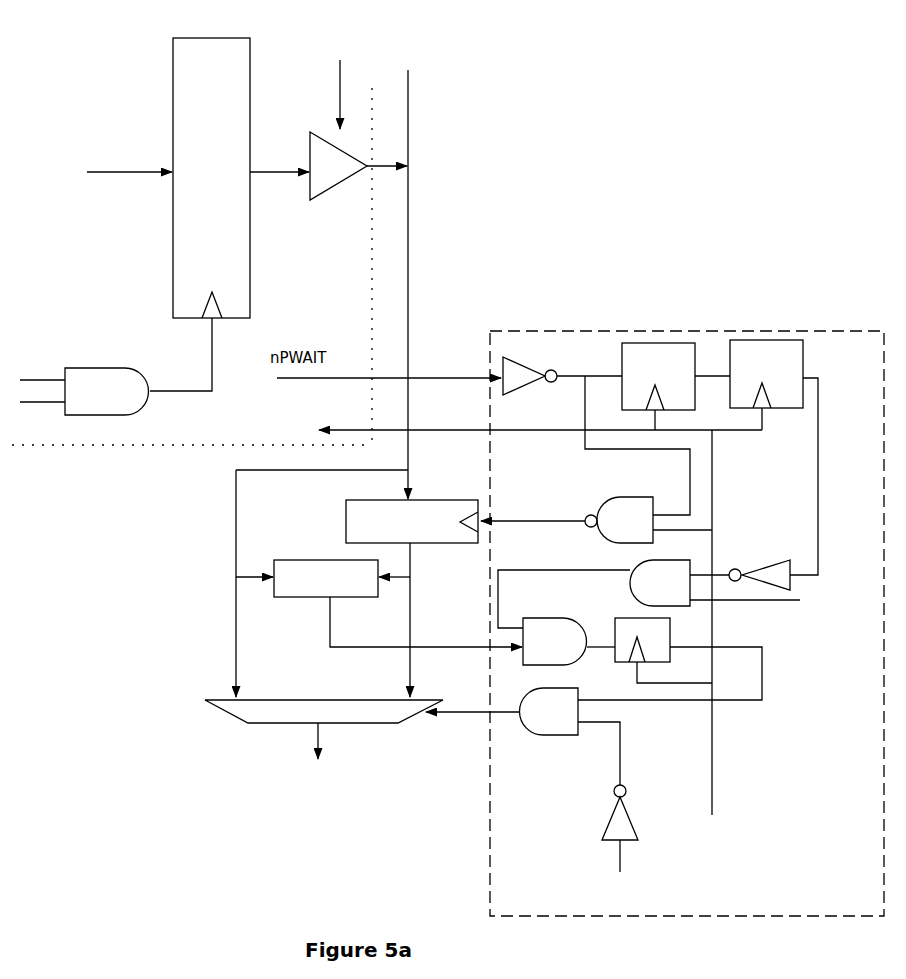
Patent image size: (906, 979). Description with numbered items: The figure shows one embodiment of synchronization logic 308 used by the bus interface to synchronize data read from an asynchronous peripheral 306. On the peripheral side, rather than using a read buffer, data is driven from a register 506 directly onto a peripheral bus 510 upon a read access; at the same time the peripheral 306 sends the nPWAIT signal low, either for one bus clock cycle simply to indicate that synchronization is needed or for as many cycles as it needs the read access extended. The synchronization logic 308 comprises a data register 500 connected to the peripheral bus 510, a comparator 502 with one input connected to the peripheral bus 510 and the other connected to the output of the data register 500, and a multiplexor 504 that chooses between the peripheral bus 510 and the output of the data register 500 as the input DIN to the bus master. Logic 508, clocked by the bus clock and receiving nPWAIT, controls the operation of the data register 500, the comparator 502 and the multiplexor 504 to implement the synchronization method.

The peripheral 306 is at (136, 112).
The register 506 is at (250, 55).
The peripheral bus 510 is at (408, 228).
The logic 508 is at (712, 331).
The data register 500 is at (346, 535).
The comparator 502 is at (274, 597).
The multiplexor 504 is at (225, 708).
The synchronization logic 308 is at (268, 753).